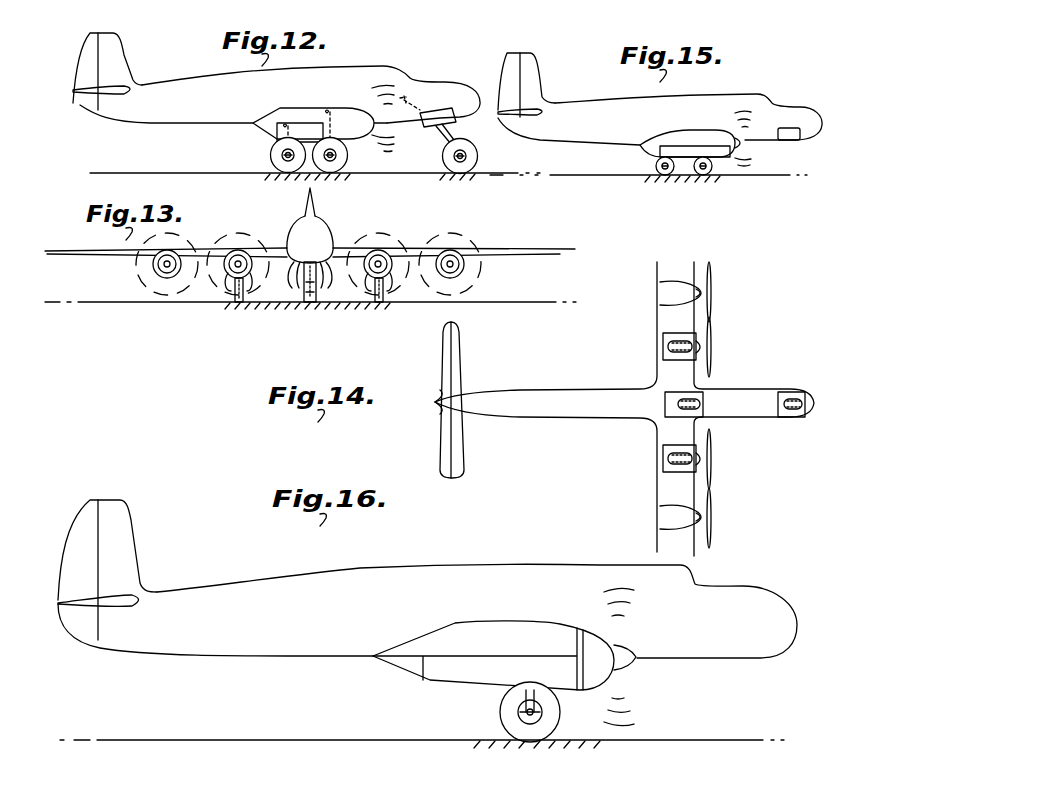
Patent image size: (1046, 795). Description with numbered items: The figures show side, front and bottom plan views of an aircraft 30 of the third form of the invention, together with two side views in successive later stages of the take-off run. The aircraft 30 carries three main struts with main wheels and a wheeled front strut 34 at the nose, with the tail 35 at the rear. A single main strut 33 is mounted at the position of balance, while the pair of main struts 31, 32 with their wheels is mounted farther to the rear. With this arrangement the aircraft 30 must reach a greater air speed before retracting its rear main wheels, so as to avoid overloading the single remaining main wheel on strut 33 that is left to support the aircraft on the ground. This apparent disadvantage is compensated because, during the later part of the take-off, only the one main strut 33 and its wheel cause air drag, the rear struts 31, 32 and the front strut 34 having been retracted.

In FIG. 12, the aircraft 30 is at (190, 88).
In FIG. 15, the aircraft 30 is at (583, 112).
In FIG. 13, the aircraft 30 is at (292, 230).
In FIG. 14, the aircraft 30 is at (543, 414).
In FIG. 16, the aircraft 30 is at (252, 592).
In FIG. 12, the main strut 31 is at (270, 157).
In FIG. 15, the main strut 31 is at (666, 178).
In FIG. 13, the main strut 31 is at (234, 298).
In FIG. 14, the main strut 31 is at (666, 334).
In FIG. 13, the main strut 32 is at (390, 300).
In FIG. 14, the main strut 32 is at (668, 470).
In FIG. 12, the main strut 33 is at (347, 162).
In FIG. 15, the main strut 33 is at (714, 176).
In FIG. 13, the main strut 33 is at (296, 290).
In FIG. 14, the main strut 33 is at (690, 396).
In FIG. 16, the main strut 33 is at (530, 716).
In FIG. 12, the front strut 34 is at (474, 148).
In FIG. 13, the front strut 34 is at (318, 294).
In FIG. 14, the front strut 34 is at (795, 418).
In FIG. 12, the tail 35 is at (80, 102).
In FIG. 15, the tail 35 is at (504, 98).
In FIG. 14, the tail 35 is at (446, 434).
In FIG. 16, the tail 35 is at (76, 624).